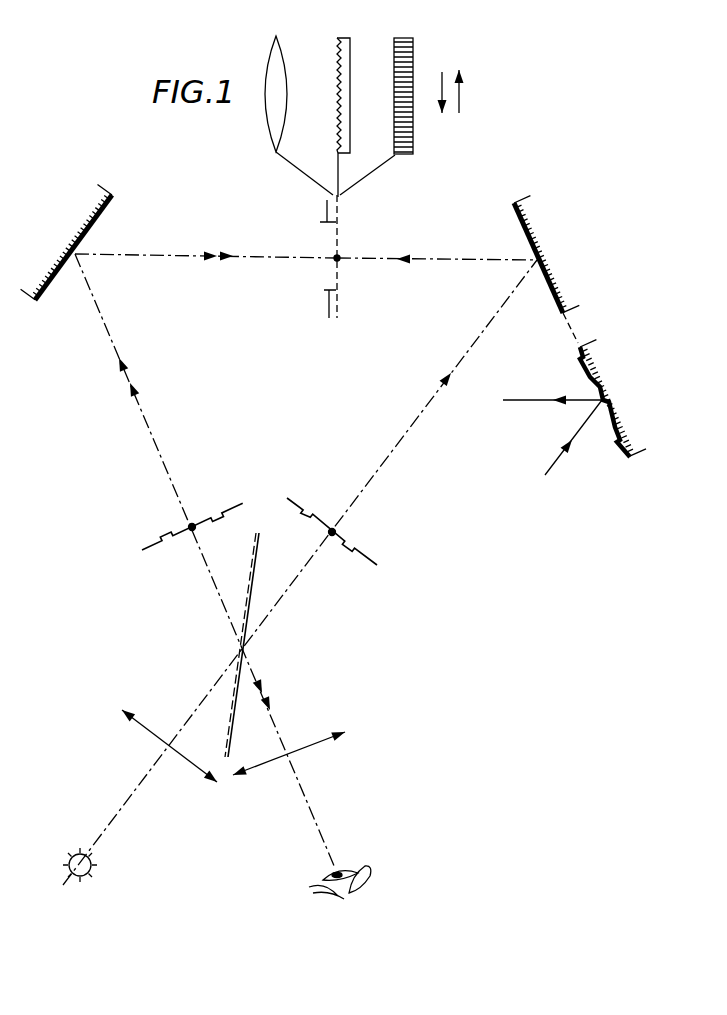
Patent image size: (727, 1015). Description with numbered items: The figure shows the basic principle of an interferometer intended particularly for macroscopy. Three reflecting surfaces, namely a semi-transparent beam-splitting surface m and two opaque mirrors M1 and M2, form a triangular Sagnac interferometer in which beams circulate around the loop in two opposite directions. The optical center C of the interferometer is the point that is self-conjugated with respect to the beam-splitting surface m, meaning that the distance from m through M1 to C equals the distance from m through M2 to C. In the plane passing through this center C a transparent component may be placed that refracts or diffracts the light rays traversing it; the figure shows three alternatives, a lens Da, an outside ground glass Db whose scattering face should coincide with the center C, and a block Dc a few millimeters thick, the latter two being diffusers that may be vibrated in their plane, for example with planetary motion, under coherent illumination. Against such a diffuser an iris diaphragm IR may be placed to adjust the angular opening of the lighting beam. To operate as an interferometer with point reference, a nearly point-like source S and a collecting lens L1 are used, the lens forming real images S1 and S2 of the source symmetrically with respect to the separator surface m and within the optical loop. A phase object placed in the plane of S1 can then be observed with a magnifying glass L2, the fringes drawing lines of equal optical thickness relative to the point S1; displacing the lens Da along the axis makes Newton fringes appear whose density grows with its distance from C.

The lens Da is at (297, 99).
The outside ground glass Db is at (341, 100).
The block Dc is at (402, 99).
The optical center C is at (339, 262).
The iris diaphragm IR is at (326, 302).
The opaque mirror M1 is at (547, 254).
The opaque mirror M2 is at (66, 242).
The real image of the source S1 is at (332, 535).
The real image of the source S2 is at (190, 531).
The beam-splitting surface m is at (248, 636).
The collecting lens L1 is at (154, 740).
The magnifying glass L2 is at (298, 741).
The point-like source S is at (69, 865).